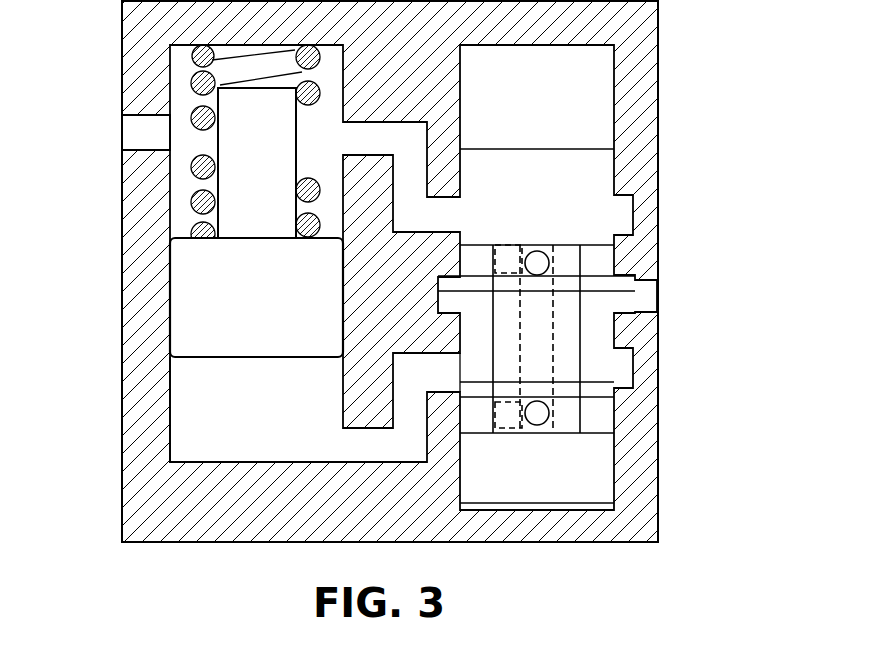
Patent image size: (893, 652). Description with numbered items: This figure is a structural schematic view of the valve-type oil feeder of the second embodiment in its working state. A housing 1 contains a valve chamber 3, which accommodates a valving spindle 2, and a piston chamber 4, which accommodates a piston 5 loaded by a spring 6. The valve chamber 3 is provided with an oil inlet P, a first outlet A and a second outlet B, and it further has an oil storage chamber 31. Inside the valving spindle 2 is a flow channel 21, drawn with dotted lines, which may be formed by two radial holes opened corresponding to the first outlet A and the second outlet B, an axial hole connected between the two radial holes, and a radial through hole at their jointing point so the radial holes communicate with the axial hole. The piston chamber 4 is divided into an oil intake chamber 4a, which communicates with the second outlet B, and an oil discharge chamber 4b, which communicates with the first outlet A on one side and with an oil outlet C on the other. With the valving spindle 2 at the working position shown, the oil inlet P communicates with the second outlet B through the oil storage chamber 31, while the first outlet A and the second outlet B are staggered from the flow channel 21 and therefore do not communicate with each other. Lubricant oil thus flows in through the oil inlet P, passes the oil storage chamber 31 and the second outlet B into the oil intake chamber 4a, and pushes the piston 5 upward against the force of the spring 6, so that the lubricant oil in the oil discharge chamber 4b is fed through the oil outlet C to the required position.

The housing 1 is at (630, 120).
The valving spindle 2 is at (577, 187).
The valve chamber 3 is at (543, 507).
The piston chamber 4 is at (163, 298).
The oil intake chamber 4a is at (220, 440).
The oil discharge chamber 4b is at (247, 132).
The piston 5 is at (183, 190).
The spring 6 is at (190, 72).
The flow channel 21 is at (537, 342).
The oil storage chamber 31 is at (593, 313).
The first outlet A is at (460, 193).
The second outlet B is at (460, 400).
The oil outlet C is at (140, 128).
The oil inlet P is at (663, 288).